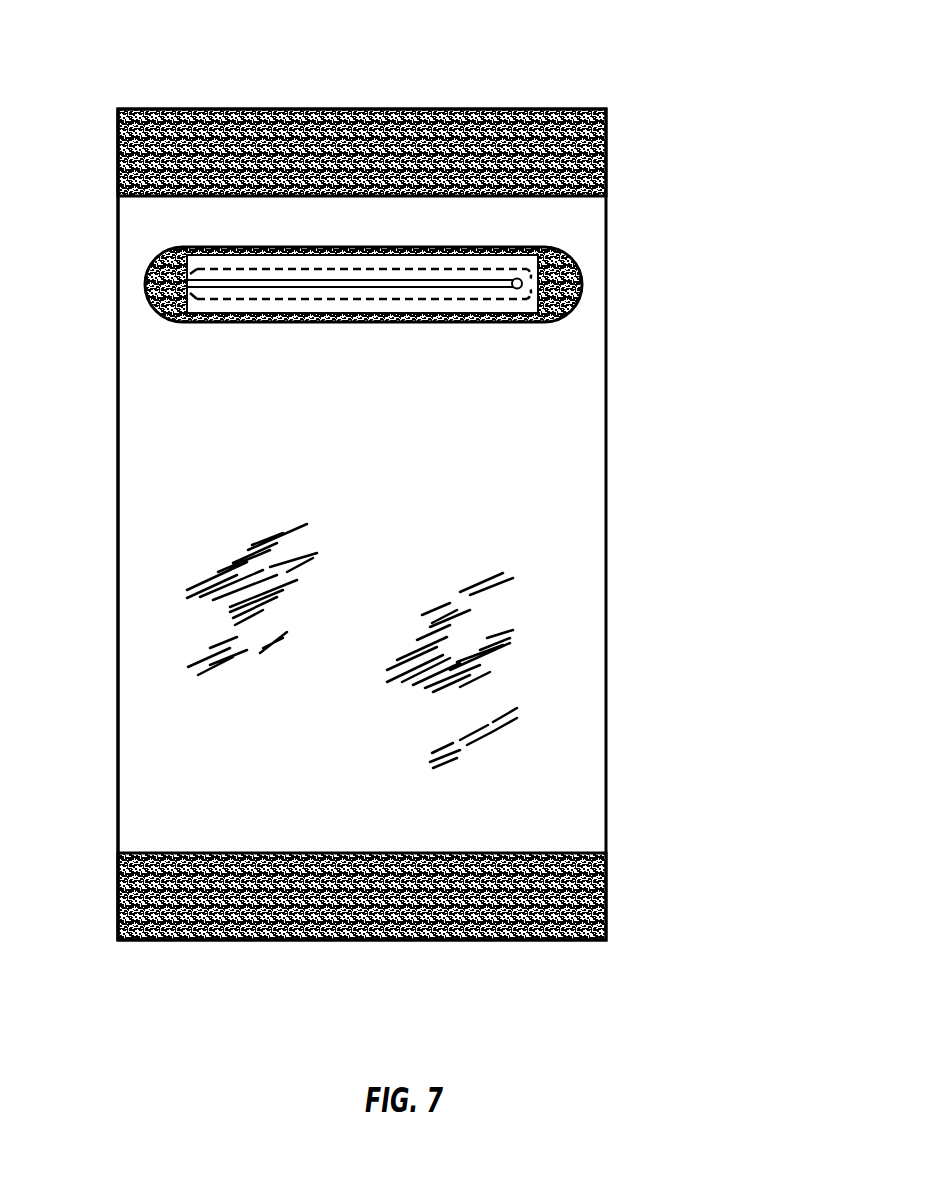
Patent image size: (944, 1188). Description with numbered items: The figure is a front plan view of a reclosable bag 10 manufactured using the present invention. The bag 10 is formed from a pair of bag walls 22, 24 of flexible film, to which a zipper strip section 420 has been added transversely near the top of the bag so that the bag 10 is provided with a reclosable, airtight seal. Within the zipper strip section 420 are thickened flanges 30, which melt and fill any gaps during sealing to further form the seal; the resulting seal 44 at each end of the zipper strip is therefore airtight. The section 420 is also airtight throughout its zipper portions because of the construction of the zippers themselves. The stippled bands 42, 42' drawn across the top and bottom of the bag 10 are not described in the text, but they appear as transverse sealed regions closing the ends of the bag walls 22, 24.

The reclosable bag 10 is at (727, 73).
The bag wall 22 is at (177, 718).
The bag wall 24 is at (134, 569).
The thickened flange 30 is at (320, 262).
The top end seal 42 is at (362, 132).
The bottom end seal 42' is at (362, 878).
The seal 44 is at (145, 286).
The zipper strip section 420 is at (151, 243).